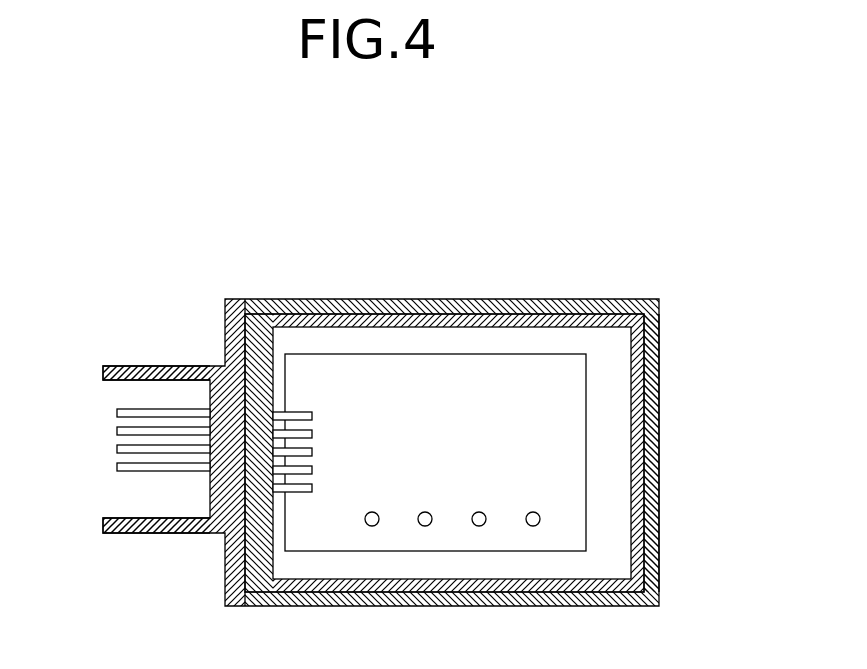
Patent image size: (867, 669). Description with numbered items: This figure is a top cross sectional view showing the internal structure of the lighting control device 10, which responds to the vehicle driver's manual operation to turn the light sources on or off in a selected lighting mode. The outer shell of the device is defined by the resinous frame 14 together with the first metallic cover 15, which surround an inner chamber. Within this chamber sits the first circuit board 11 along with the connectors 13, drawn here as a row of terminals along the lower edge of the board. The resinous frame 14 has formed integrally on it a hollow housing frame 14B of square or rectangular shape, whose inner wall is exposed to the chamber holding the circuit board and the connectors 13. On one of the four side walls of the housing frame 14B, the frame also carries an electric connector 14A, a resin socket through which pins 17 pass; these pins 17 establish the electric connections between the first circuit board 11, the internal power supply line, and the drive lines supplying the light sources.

The lighting control device 10 is at (450, 210).
The first circuit board 11 is at (383, 367).
The connectors 13 is at (372, 526).
The resinous frame 14 is at (225, 322).
The electric connector 14A is at (148, 533).
The hollow housing frame 14B is at (638, 452).
The first metallic cover 15 is at (592, 301).
The pins 17 is at (117, 431).